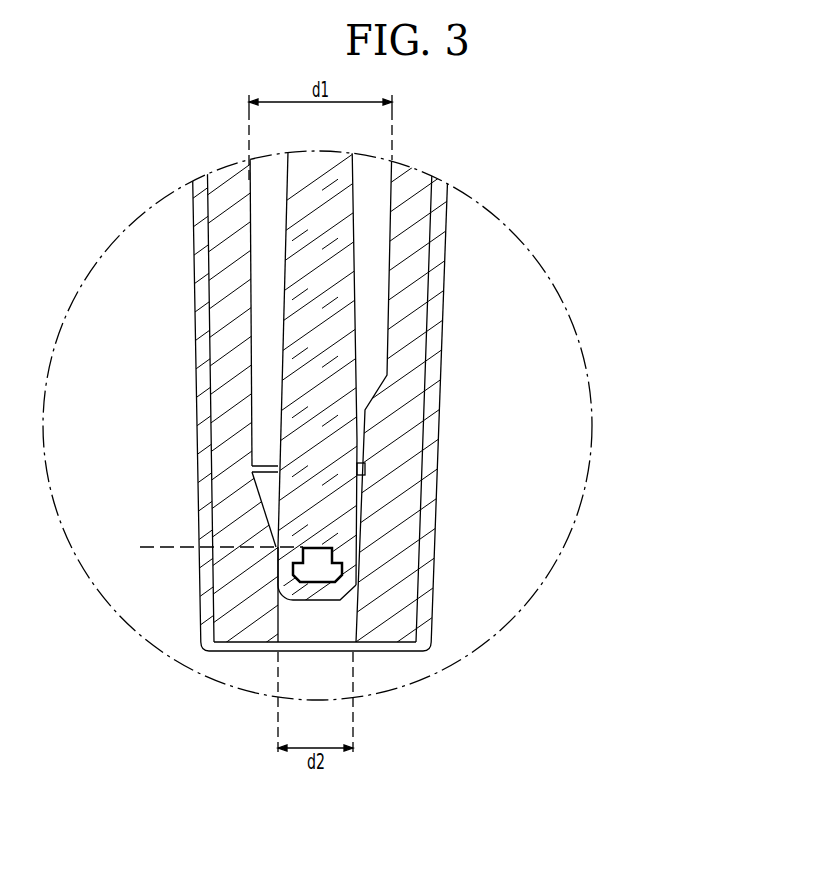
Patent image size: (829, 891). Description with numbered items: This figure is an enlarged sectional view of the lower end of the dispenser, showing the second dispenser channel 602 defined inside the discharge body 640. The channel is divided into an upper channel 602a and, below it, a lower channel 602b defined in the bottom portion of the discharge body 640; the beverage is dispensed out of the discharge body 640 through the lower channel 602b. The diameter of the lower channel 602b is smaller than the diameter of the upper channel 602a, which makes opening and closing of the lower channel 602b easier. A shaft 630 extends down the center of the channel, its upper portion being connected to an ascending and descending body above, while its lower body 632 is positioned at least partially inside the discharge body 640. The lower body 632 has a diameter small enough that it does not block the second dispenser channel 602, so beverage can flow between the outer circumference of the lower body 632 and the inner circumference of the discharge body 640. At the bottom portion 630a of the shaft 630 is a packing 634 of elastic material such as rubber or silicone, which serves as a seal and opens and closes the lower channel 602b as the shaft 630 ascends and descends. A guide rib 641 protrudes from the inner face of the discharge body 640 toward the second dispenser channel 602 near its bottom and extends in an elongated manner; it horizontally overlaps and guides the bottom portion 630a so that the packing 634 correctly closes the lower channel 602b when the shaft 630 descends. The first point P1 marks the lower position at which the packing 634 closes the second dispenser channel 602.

The second dispenser channel 602 is at (458, 398).
The upper channel 602a is at (375, 318).
The lower channel 602b is at (311, 624).
The shaft 630 is at (389, 440).
The lower body 632 is at (317, 379).
The bottom portion 630a is at (290, 547).
The packing 634 is at (302, 594).
The discharge body 640 is at (223, 346).
The guide rib 641 is at (372, 437).
The first point P1 is at (208, 548).